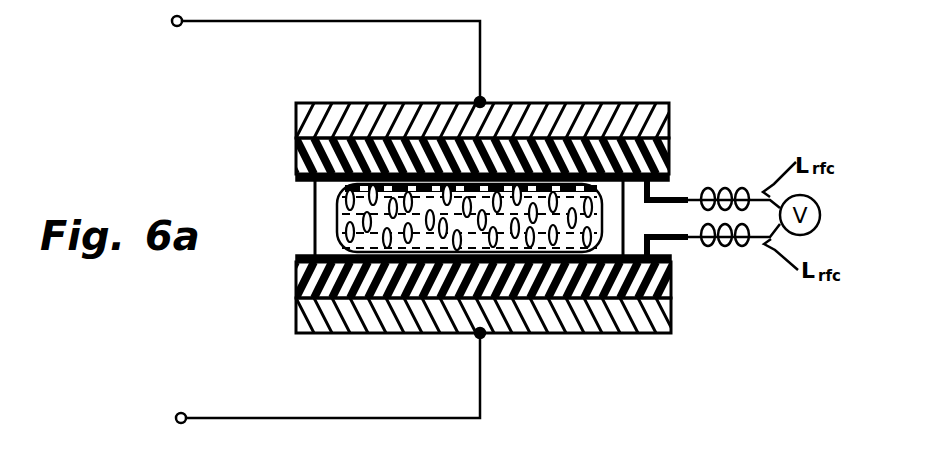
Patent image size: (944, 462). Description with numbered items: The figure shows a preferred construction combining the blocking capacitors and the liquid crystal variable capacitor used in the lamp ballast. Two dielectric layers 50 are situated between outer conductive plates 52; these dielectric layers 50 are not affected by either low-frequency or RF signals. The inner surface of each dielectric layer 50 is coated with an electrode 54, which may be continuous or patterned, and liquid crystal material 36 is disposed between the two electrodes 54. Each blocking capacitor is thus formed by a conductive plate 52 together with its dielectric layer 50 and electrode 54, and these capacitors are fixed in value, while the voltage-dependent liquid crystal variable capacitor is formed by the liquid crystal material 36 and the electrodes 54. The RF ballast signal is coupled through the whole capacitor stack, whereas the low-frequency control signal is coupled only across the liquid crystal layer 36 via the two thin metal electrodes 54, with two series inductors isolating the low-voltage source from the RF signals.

The liquid crystal material 36 is at (340, 214).
The dielectric layer 50 is at (296, 165).
The conductive plate 52 is at (670, 110).
The electrode 54 is at (670, 174).